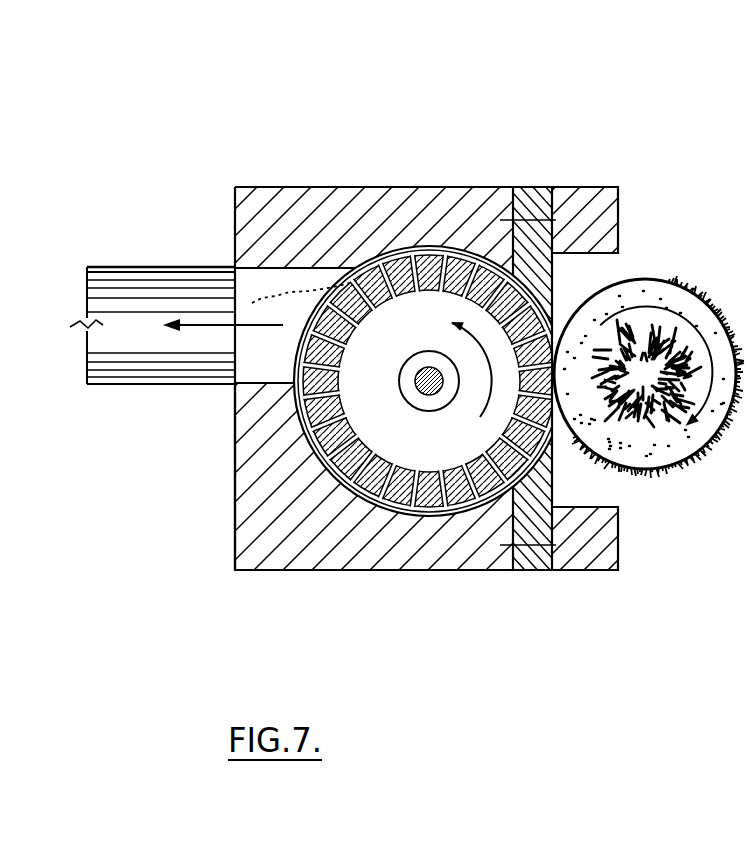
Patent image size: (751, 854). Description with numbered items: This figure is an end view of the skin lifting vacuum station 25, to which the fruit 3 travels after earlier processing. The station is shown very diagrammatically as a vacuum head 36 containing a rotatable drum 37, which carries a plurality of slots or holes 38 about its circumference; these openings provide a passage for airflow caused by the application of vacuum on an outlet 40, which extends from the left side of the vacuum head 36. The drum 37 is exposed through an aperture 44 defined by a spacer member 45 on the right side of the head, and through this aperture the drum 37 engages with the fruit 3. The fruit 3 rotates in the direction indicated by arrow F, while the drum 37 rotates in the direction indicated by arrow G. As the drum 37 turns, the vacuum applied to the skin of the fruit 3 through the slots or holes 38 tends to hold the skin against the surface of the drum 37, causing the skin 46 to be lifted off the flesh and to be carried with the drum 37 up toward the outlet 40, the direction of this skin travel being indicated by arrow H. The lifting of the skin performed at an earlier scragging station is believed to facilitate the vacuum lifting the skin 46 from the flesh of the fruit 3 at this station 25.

The skin lifting vacuum station 25 is at (638, 157).
The vacuum head 36 is at (358, 184).
The rotatable drum 37 is at (407, 249).
The skin 46 is at (475, 247).
The spacer member 45 is at (545, 187).
The aperture 44 is at (556, 325).
The outlet 40 is at (147, 268).
The slots or holes 38 is at (236, 478).
The fruit 3 is at (657, 278).
The arrow H is at (213, 326).
The arrow G is at (469, 385).
The arrow F is at (644, 365).